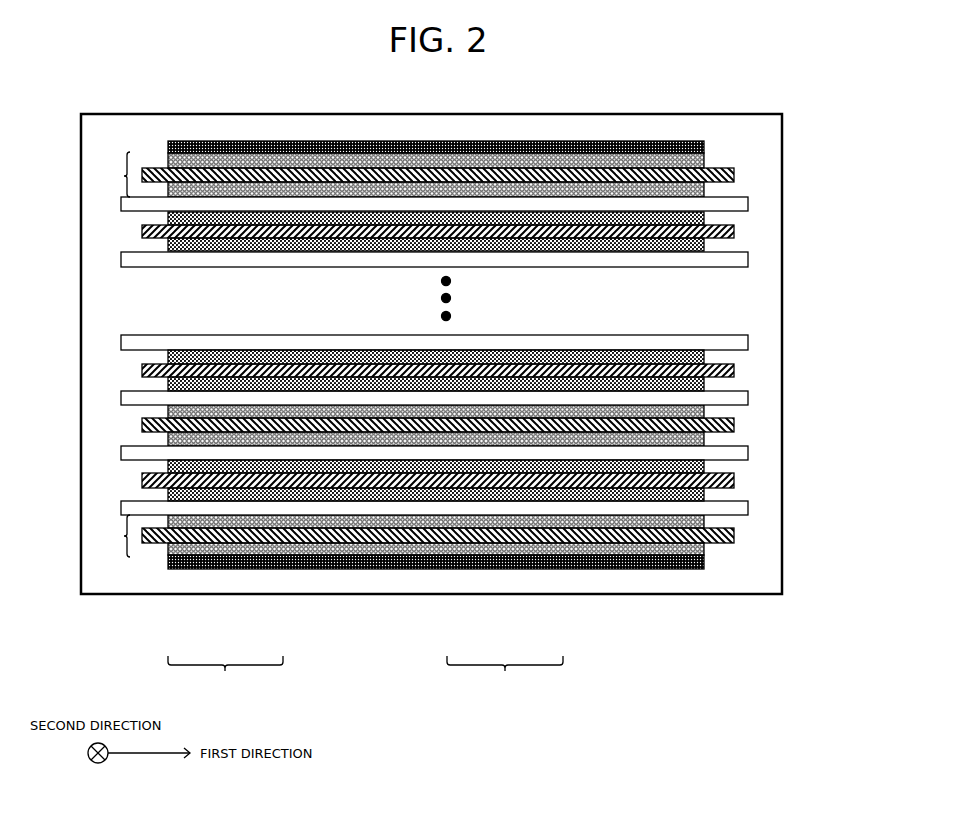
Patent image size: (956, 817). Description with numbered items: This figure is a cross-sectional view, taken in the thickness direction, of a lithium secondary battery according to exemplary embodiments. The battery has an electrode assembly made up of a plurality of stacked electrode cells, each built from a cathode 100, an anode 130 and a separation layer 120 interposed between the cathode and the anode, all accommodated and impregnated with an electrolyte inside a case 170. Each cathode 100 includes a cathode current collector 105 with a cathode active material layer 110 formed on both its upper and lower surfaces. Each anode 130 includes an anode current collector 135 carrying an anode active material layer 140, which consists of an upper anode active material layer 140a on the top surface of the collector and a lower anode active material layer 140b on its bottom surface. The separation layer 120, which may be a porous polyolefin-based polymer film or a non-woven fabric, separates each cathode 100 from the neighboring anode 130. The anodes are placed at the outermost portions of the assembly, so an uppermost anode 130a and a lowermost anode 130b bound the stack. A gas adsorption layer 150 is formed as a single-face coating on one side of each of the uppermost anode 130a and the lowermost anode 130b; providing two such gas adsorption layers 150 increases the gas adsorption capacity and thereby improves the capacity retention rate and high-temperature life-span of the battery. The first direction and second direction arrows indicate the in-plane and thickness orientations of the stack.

The cathode 100 is at (505, 675).
The cathode current collector 105 is at (505, 475).
The cathode active material layer 110 is at (473, 492).
The separation layer 120 is at (352, 507).
The anode 130 is at (225, 675).
The uppermost anode 130a is at (107, 174).
The lowermost anode 130b is at (107, 536).
The anode current collector 135 is at (223, 528).
The anode active material layer 140 is at (185, 517).
The upper anode active material layer 140a is at (704, 160).
The lower anode active material layer 140b is at (704, 188).
The gas adsorption layer 150 is at (704, 143).
The case 170 is at (753, 594).